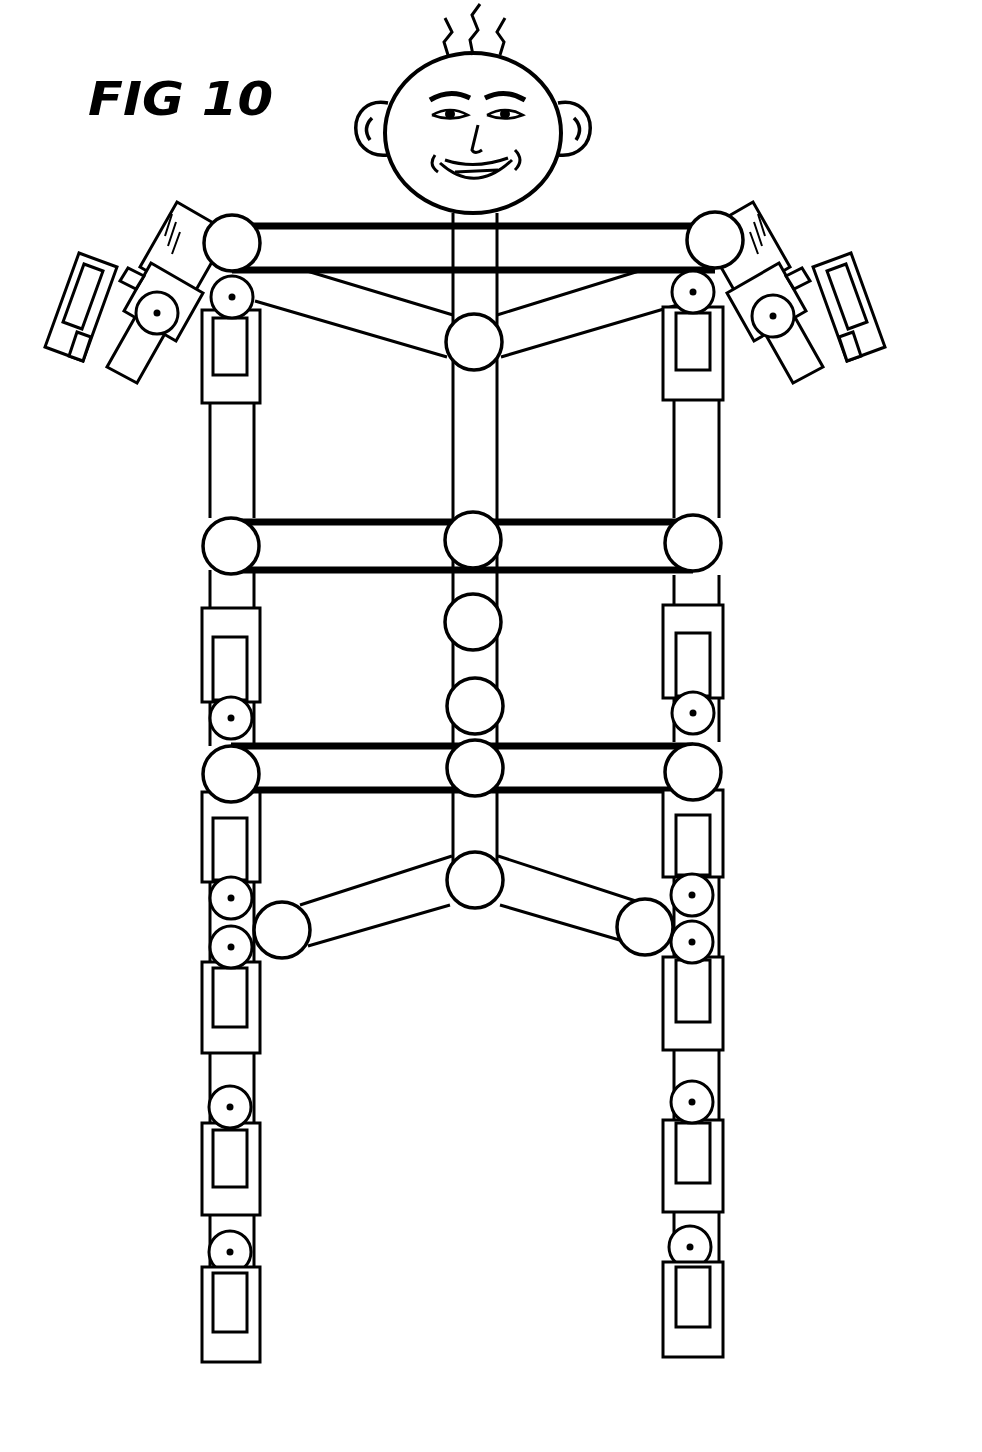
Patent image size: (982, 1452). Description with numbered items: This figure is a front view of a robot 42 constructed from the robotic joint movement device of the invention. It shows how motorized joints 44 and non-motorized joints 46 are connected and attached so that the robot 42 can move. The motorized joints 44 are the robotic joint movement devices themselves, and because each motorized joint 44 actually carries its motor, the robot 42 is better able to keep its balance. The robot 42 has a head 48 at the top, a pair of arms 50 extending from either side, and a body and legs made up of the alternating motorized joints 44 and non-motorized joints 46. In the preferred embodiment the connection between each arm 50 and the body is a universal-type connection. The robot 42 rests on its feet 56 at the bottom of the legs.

The robot 42 is at (660, 96).
The motorized joint 44 is at (158, 300).
The non-motorized joint 46 is at (222, 228).
The head 48 is at (518, 63).
The arm 50 is at (140, 378).
The foot 56 is at (243, 1342).